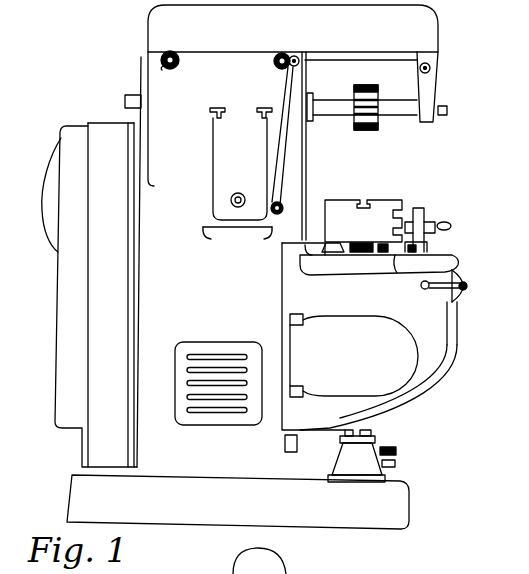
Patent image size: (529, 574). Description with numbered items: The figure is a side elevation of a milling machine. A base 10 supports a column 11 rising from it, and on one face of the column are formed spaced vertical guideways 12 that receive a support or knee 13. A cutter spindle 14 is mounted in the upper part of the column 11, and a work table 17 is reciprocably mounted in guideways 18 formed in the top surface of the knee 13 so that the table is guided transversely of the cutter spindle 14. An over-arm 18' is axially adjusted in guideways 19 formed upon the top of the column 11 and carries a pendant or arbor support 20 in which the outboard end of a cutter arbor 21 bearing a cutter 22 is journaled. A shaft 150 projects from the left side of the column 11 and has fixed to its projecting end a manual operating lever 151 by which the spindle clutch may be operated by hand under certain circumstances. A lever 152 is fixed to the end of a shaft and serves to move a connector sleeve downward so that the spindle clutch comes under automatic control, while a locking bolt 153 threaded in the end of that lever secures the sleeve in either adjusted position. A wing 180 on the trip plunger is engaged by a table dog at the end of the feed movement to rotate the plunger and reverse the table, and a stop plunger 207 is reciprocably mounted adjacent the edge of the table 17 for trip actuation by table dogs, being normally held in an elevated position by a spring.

The base 10 is at (72, 477).
The column 11 is at (157, 127).
The vertical guideways 12 is at (297, 155).
The knee 13 is at (438, 322).
The cutter spindle 14 is at (310, 92).
The work table 17 is at (397, 206).
The guideways 18 is at (383, 273).
The over-arm 18' is at (314, 289).
The guideways 19 is at (227, 47).
The arbor support 20 is at (432, 85).
The cutter arbor 21 is at (393, 112).
The cutter 22 is at (372, 130).
The shaft 150 is at (279, 203).
The manual operating lever 151 is at (282, 187).
The lever 152 is at (390, 447).
The locking bolt 153 is at (410, 208).
The wing 180 is at (423, 222).
The stop plunger 207 is at (427, 242).